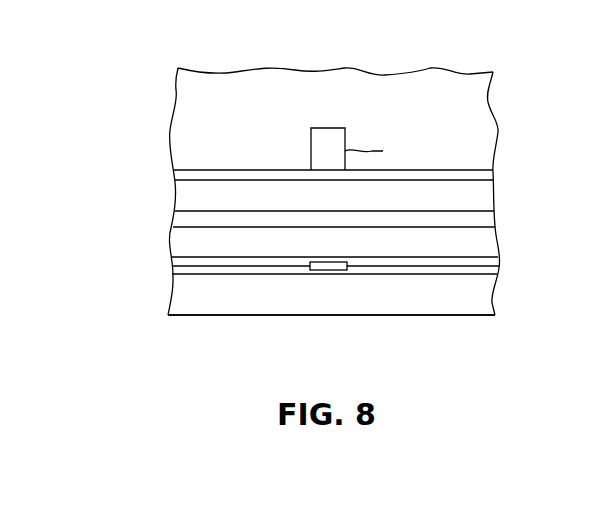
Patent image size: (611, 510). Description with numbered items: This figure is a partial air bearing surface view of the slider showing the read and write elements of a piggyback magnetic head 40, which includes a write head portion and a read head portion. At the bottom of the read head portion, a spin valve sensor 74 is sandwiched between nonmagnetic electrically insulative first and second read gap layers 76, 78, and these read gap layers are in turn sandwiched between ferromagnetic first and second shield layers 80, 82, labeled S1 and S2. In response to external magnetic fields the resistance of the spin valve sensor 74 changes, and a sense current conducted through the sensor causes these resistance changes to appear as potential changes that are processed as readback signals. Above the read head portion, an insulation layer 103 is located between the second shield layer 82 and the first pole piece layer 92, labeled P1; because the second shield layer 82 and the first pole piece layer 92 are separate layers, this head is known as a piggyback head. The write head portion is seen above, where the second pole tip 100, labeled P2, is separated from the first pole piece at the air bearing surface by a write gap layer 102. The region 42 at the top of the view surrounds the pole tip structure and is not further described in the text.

The piggyback magnetic head 40 is at (512, 87).
The overcoat layer 42 is at (182, 98).
The second pole tip 100 is at (325, 137).
The write gap layer 102 is at (245, 175).
The first pole piece layer 92 is at (183, 192).
The insulation layer 103 is at (486, 221).
The second shield layer 82 is at (180, 244).
The first read gap layer 76 is at (233, 274).
The spin valve sensor 74 is at (325, 268).
The second read gap layer 78 is at (455, 260).
The first shield layer 80 is at (483, 298).